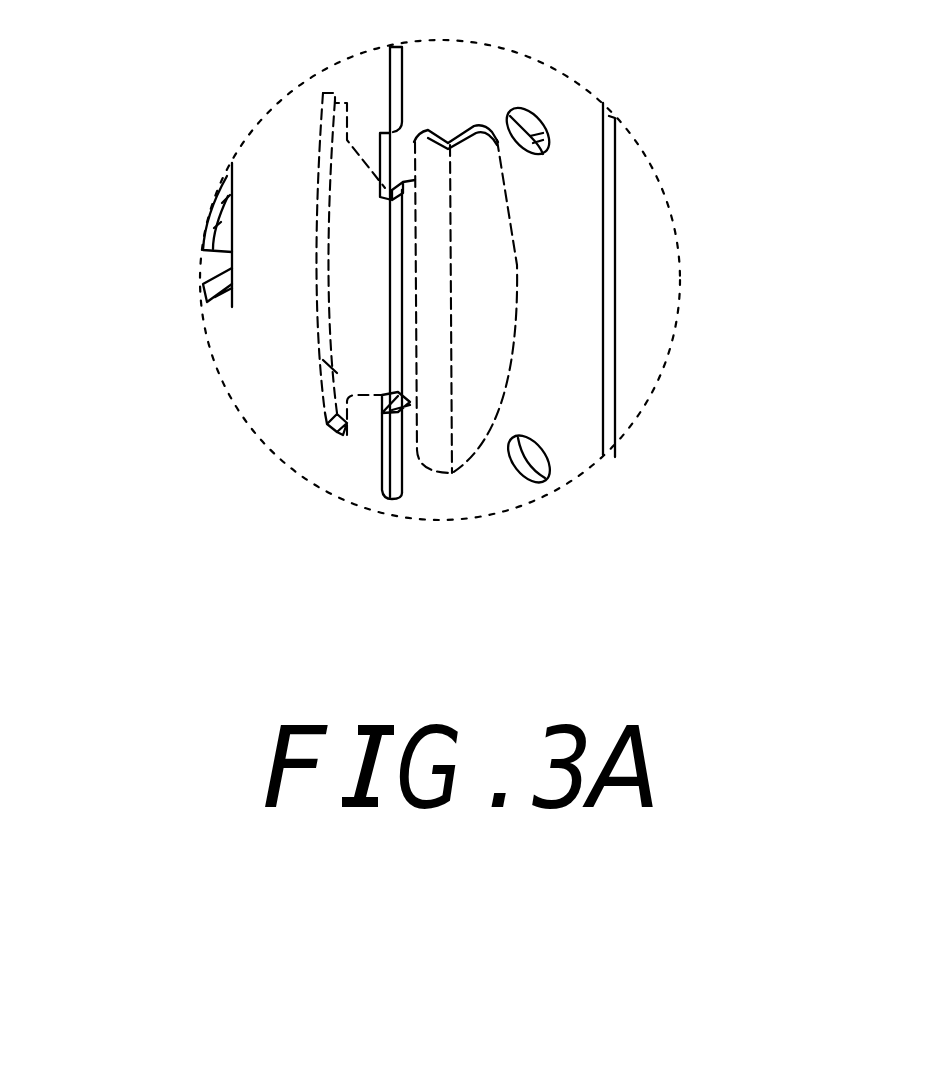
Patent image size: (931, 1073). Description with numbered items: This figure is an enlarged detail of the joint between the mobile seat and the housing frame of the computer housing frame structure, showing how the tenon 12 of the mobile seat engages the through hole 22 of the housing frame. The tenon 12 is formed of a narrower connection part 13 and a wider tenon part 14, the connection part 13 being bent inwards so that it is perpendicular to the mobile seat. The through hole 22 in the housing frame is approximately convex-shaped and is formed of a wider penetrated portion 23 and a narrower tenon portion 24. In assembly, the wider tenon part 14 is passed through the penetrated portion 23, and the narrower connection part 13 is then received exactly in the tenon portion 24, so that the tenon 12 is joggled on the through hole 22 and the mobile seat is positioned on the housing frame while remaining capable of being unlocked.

The tenon 12 is at (582, 181).
The connection part 13 is at (397, 230).
The tenon part 14 is at (503, 287).
The through hole 22 is at (293, 298).
The penetrated portion 23 is at (320, 437).
The tenon portion 24 is at (370, 394).